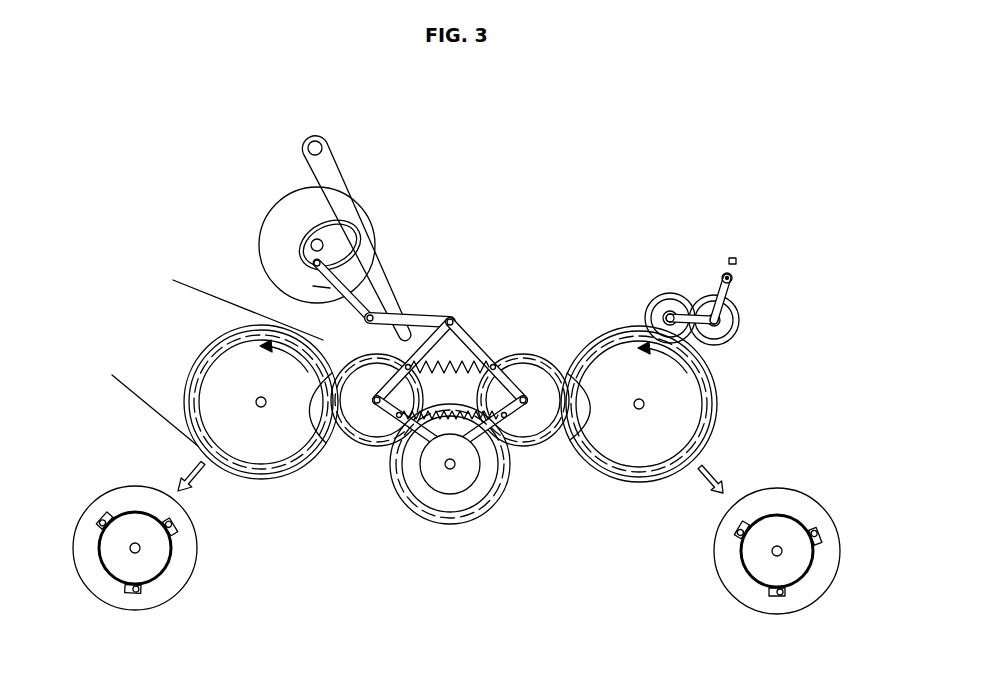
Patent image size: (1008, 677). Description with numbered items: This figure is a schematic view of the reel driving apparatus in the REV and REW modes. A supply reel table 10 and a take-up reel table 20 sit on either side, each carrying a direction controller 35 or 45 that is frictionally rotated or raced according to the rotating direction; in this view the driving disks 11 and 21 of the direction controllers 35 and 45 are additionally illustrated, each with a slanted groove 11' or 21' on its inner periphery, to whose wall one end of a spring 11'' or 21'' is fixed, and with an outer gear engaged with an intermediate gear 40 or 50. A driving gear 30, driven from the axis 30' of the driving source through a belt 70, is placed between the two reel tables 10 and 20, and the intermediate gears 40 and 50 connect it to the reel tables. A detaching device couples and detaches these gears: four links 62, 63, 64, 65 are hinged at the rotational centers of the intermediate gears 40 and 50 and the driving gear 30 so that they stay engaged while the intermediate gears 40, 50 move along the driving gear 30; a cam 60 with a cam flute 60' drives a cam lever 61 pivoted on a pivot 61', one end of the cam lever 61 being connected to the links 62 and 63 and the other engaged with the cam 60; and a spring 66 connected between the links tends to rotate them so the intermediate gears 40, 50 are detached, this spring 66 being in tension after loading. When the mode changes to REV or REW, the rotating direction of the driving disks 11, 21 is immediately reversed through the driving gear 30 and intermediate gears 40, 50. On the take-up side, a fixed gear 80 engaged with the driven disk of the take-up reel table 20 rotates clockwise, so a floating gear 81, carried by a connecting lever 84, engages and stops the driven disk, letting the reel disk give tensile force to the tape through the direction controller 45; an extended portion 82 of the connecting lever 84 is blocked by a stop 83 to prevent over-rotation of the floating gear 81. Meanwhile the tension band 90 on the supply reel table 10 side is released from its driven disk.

The supply reel table 10 is at (168, 400).
The driving disk 11 is at (198, 503).
The slanted groove 11' is at (155, 616).
The spring 11'' is at (197, 510).
The take-up reel table 20 is at (740, 386).
The driving disk 21 is at (696, 518).
The slanted groove 21' is at (842, 528).
The spring 21'' is at (706, 527).
The driving gear 30 is at (450, 513).
The axis of the driving source 30' is at (282, 124).
The direction controller 35 is at (66, 560).
The intermediate gear 40 is at (367, 462).
The direction controller 45 is at (736, 618).
The intermediate gear 50 is at (547, 460).
The cam 60 is at (279, 231).
The cam flute 60' is at (283, 249).
The cam lever 61 is at (370, 252).
The pivot 61' is at (408, 270).
The link 62 is at (433, 333).
The link 63 is at (475, 335).
The link 64 is at (404, 474).
The link 65 is at (505, 488).
The spring 66 is at (496, 366).
The belt 70 is at (340, 173).
The fixed gear 80 is at (653, 297).
The floating gear 81 is at (740, 317).
The extended portion 82 is at (733, 290).
The stop 83 is at (731, 257).
The connecting lever 84 is at (690, 306).
The tension band 90 is at (204, 293).